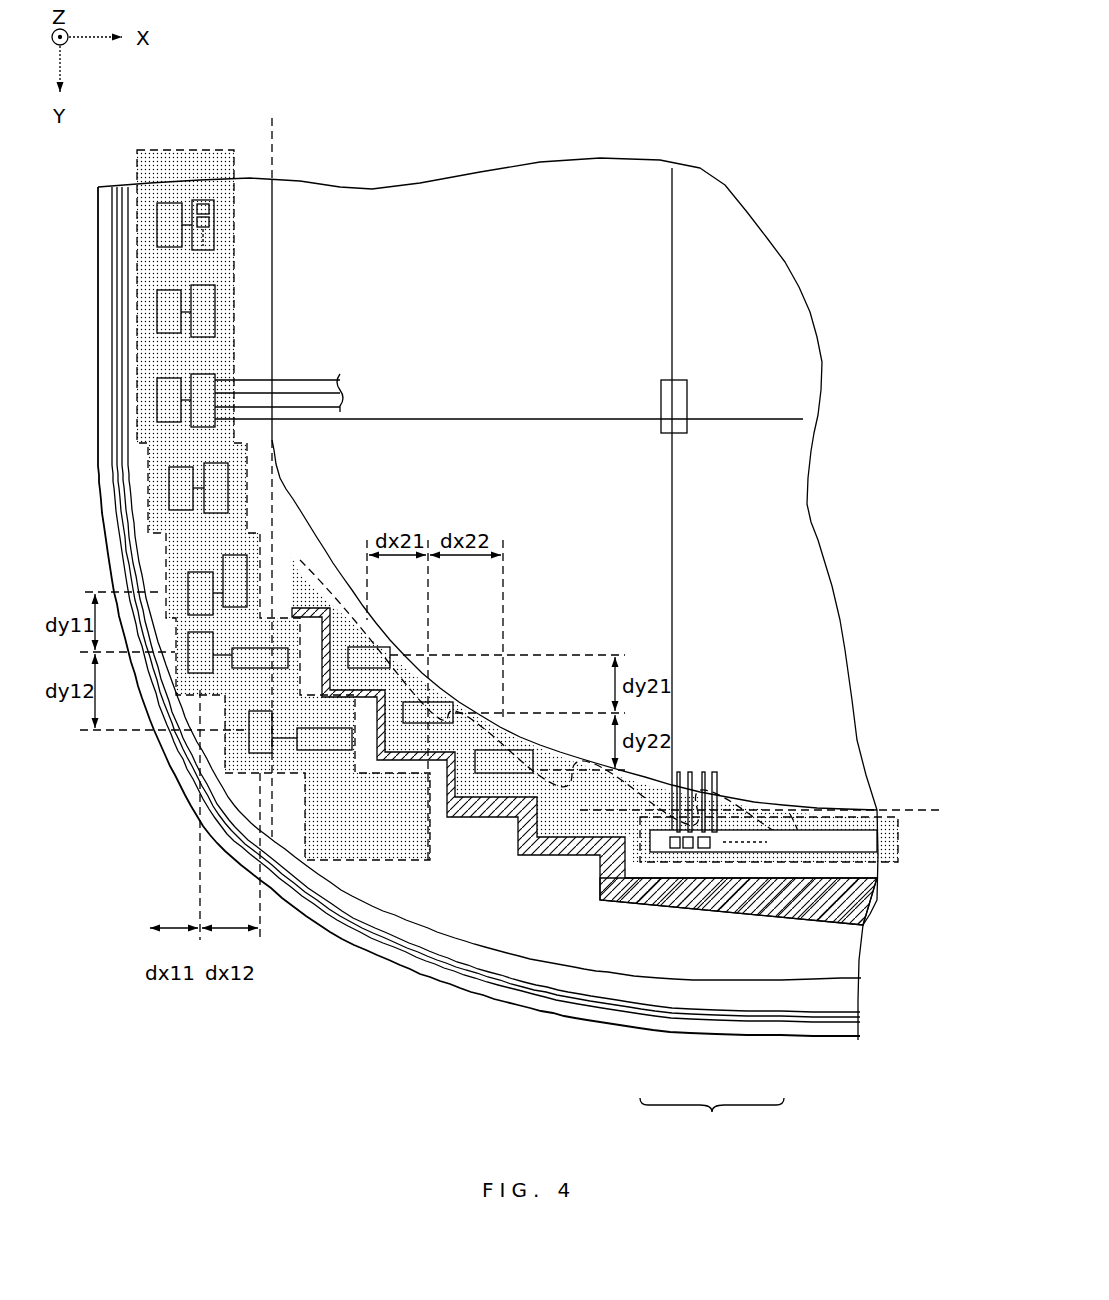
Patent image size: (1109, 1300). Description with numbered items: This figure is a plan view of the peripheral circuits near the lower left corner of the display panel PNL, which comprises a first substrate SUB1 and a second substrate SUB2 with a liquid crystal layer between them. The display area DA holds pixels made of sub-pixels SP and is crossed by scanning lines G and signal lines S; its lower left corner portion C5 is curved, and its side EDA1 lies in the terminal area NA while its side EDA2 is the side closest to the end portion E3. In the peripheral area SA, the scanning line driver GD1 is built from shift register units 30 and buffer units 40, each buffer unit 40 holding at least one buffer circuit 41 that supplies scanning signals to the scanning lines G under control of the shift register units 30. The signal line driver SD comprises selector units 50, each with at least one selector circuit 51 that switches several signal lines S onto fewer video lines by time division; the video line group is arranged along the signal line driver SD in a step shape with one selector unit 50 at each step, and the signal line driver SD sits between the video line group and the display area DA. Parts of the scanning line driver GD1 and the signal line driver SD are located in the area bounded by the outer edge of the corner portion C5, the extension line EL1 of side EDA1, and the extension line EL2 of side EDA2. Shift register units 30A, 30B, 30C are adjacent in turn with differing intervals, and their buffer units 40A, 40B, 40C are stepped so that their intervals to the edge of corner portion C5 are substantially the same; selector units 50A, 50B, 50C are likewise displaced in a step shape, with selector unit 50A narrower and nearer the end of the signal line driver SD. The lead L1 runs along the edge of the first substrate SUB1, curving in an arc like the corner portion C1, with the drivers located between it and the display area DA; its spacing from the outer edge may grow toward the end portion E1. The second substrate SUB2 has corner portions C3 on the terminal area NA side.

The shift register unit 30 is at (163, 228).
The buffer unit 40 is at (217, 233).
The buffer circuit 41 is at (217, 206).
The shift register unit 30A is at (190, 578).
The shift register unit 30B is at (190, 640).
The shift register unit 30C is at (255, 745).
The buffer unit 40A is at (247, 560).
The buffer unit 40B is at (262, 650).
The buffer unit 40C is at (312, 750).
The selector unit 50 is at (808, 830).
The selector unit 50A is at (375, 648).
The selector unit 50B is at (452, 702).
The selector unit 50C is at (535, 758).
The selector circuit 51 is at (670, 852).
The scanning line driver GD1 is at (208, 148).
The peripheral area SA is at (262, 315).
The display area DA is at (372, 186).
The terminal area NA is at (850, 988).
The side EDA1 is at (915, 808).
The side EDA2 is at (276, 130).
The scanning line G is at (565, 419).
The signal line S is at (673, 505).
The sub-pixel SP is at (688, 378).
The corner portion C5 is at (525, 715).
The extension line EL1 is at (437, 812).
The extension line EL2 is at (268, 792).
The corner portion C1 is at (343, 945).
The corner portion C3 is at (395, 918).
The lead L1 is at (563, 1004).
The first substrate SUB1 is at (752, 1037).
The second substrate SUB2 is at (675, 1020).
The display panel PNL is at (712, 1119).
The end portion E1 is at (823, 1037).
The end portion E3 is at (98, 397).
The signal line driver SD is at (902, 842).